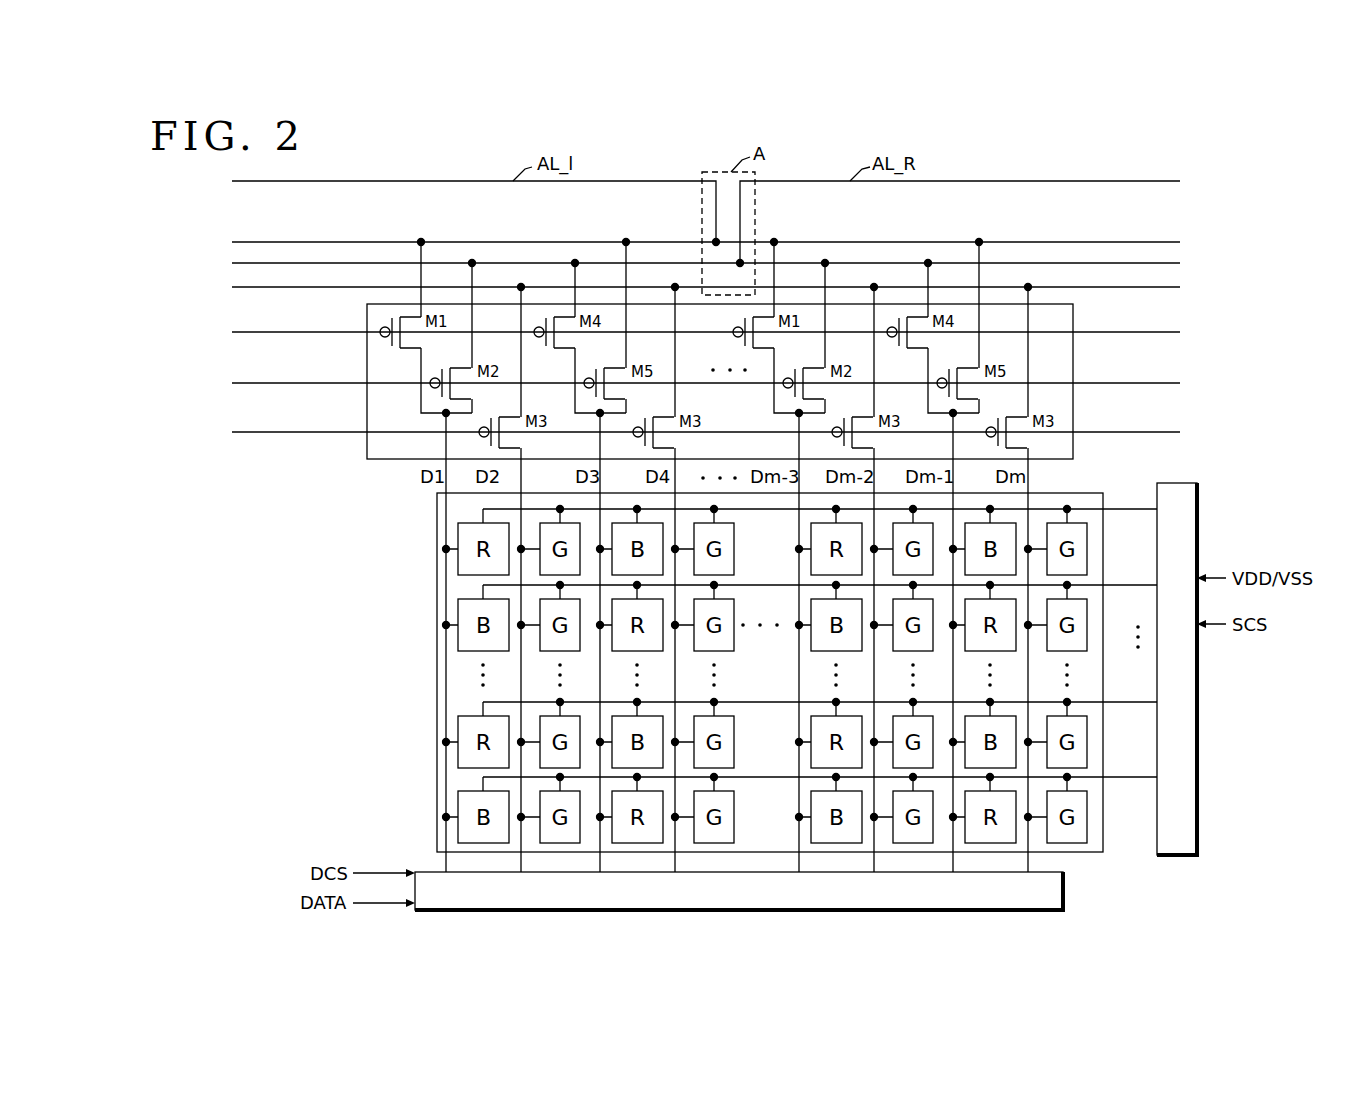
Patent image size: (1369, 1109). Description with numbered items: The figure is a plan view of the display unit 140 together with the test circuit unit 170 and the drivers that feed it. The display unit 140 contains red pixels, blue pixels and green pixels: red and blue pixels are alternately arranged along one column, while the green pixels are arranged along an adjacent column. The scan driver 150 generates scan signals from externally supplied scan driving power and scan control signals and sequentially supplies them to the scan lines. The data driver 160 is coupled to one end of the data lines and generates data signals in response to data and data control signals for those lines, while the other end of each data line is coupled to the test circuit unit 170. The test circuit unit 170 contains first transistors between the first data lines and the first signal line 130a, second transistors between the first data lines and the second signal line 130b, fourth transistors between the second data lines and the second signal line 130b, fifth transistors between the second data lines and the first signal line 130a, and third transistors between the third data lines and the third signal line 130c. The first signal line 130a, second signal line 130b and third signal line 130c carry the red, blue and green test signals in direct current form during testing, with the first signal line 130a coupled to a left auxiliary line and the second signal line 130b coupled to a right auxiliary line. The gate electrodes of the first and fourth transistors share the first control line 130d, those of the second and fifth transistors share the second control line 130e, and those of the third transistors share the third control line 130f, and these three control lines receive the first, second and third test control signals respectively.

The first signal line 130a is at (269, 241).
The second signal line 130b is at (321, 263).
The third signal line 130c is at (385, 287).
The first control line 130d is at (258, 332).
The second control line 130e is at (316, 383).
The third control line 130f is at (352, 432).
The display unit 140 is at (437, 640).
The scan driver 150 is at (1197, 500).
The data driver 160 is at (1063, 893).
The test circuit unit 170 is at (1073, 320).